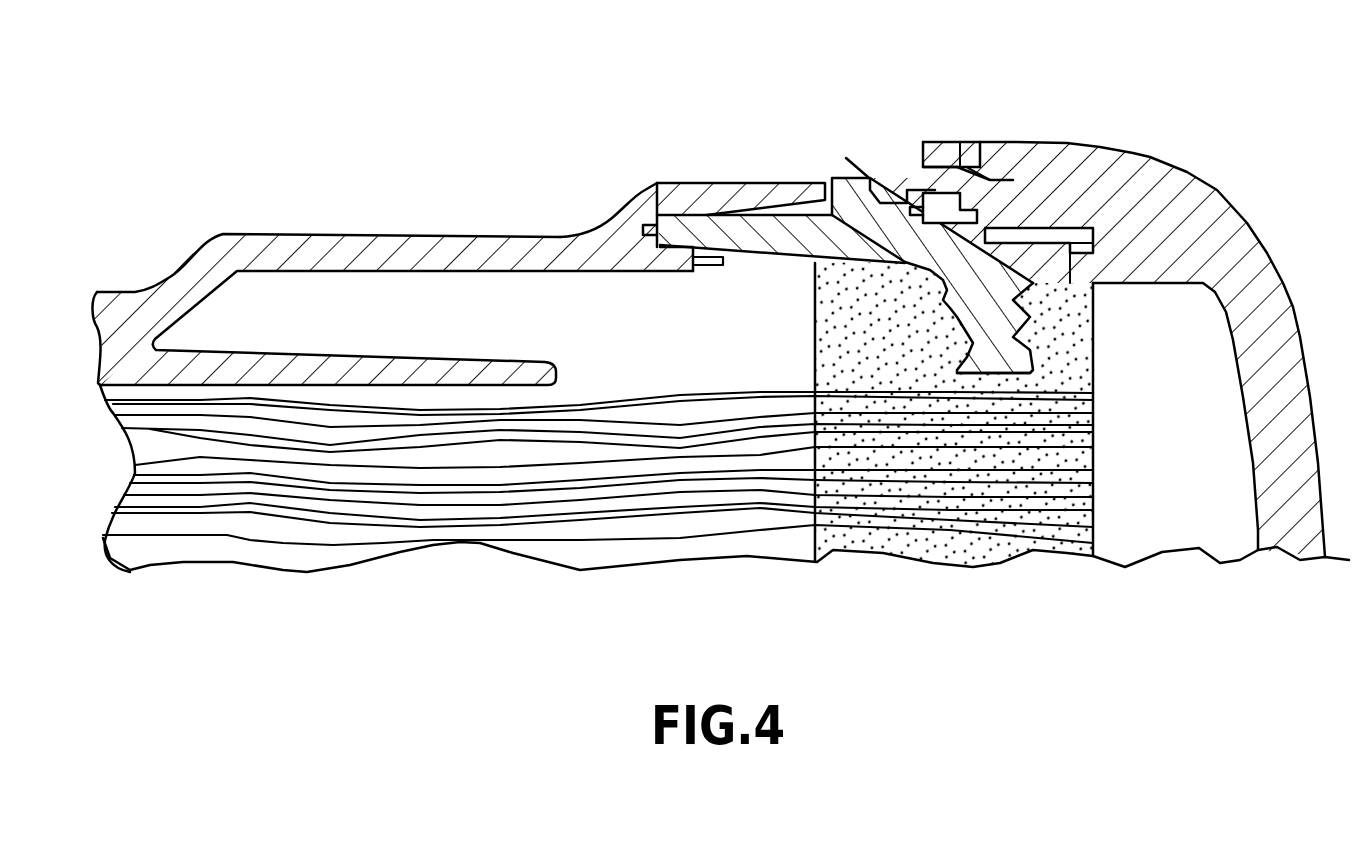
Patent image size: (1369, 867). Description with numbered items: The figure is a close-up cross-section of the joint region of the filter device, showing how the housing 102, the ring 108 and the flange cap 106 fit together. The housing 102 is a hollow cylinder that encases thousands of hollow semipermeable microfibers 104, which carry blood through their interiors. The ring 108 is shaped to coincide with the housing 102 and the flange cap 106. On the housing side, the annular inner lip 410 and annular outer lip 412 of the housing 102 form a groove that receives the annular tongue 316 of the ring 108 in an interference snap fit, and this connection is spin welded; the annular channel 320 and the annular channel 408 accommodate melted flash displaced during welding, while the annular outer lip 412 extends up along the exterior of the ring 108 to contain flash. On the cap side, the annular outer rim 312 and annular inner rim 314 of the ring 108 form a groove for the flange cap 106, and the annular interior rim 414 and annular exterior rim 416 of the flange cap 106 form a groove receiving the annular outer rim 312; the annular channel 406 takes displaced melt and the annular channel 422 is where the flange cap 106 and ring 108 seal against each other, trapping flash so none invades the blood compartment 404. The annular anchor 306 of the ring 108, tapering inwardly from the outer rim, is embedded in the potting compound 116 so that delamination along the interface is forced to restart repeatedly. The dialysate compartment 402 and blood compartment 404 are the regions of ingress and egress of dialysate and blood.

The housing 102 is at (372, 234).
The microfibers 104 is at (612, 447).
The flange cap 106 is at (1180, 165).
The ring 108 is at (878, 178).
The potting compound 116 is at (863, 327).
The annular anchor 306 is at (997, 377).
The annular outer rim 312 is at (968, 168).
The annular inner rim 314 is at (1062, 236).
The annular tongue 316 is at (747, 256).
The annular channel 320 is at (840, 153).
The dialysate compartment 402 is at (553, 310).
The blood compartment 404 is at (1165, 512).
The annular channel 406 is at (1010, 190).
The annular channel 408 is at (655, 190).
The annular inner lip 410 is at (718, 268).
The annular outer lip 412 is at (779, 185).
The annular interior rim 414 is at (923, 165).
The annular exterior rim 416 is at (960, 142).
The annular channel 422 is at (1082, 238).